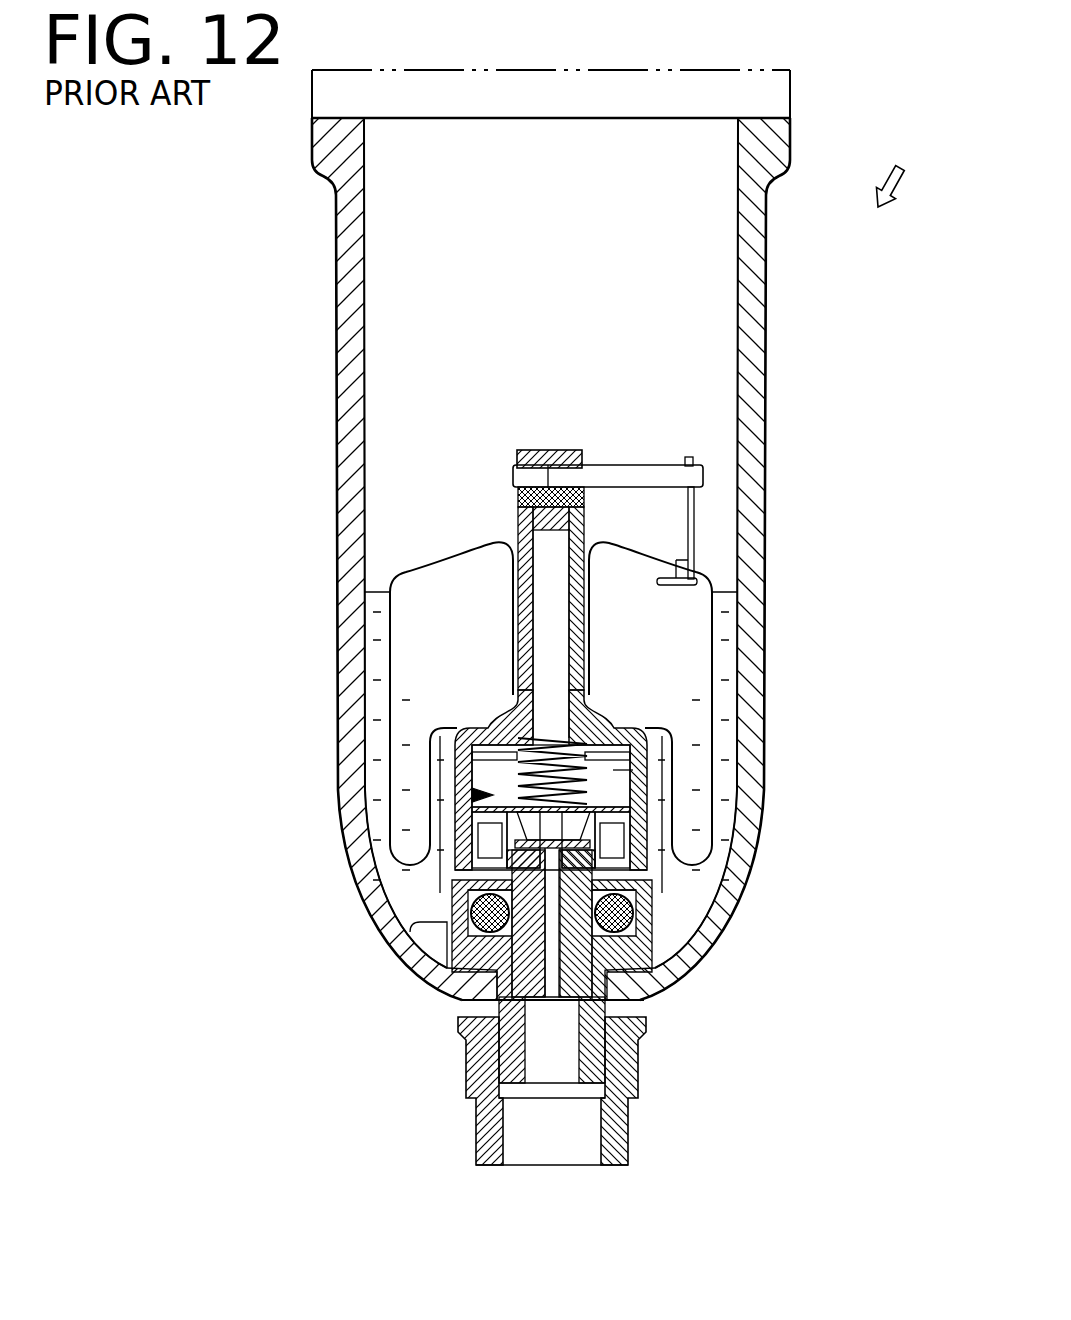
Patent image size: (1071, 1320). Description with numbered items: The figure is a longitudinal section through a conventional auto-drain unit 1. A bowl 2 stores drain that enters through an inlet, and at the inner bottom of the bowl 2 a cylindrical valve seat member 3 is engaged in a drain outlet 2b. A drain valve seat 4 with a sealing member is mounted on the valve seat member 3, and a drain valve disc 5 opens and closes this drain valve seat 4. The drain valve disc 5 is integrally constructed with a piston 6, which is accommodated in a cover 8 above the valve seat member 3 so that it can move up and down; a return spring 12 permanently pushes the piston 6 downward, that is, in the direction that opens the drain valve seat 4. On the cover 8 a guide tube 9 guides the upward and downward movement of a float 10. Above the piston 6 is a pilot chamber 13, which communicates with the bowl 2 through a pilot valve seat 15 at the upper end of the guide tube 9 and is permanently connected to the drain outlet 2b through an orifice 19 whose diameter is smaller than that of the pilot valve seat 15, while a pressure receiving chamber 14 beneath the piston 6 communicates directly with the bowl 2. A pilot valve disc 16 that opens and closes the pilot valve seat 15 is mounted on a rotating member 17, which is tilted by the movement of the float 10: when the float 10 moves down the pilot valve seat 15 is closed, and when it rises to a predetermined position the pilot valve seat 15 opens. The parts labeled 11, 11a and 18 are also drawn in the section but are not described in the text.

The auto-drain unit 1 is at (895, 159).
The bowl 2 is at (750, 283).
The drain outlet 2b is at (590, 1130).
The valve seat member 3 is at (457, 1000).
The drain valve seat 4 is at (615, 950).
The drain valve disc 5 is at (613, 1005).
The piston 6 is at (470, 793).
The cover 8 is at (653, 800).
The guide tube 9 is at (517, 623).
The float 10 is at (427, 573).
The O-ring 11 is at (468, 865).
The groove 11a is at (447, 923).
The return spring 12 is at (667, 732).
The pilot chamber 13 is at (613, 768).
The pressure receiving chamber 14 is at (643, 887).
The pilot valve seat 15 is at (517, 518).
The pilot valve disc 16 is at (558, 448).
The rotating member 17 is at (652, 468).
The rod 18 is at (695, 532).
The orifice 19 is at (653, 817).